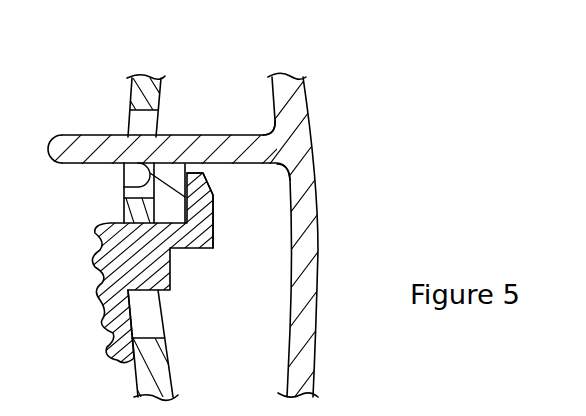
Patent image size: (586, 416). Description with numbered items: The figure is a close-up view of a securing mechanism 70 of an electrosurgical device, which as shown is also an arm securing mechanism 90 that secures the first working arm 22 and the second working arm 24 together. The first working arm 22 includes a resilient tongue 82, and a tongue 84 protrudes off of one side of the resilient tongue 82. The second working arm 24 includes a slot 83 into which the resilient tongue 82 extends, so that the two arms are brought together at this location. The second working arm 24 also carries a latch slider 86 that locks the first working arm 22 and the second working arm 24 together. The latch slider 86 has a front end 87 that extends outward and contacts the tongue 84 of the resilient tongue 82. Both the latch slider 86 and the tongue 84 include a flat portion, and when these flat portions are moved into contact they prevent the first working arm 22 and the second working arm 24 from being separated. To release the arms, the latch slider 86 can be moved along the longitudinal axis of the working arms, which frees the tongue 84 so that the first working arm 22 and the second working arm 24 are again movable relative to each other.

The first working arm 22 is at (310, 117).
The second working arm 24 is at (132, 90).
The securing mechanism 70 is at (179, 208).
The arm securing mechanism 90 is at (179, 208).
The resilient tongue 82 is at (52, 162).
The slot 83 is at (149, 141).
The tongue 84 is at (163, 170).
The latch slider 86 is at (150, 253).
The front end 87 is at (215, 204).